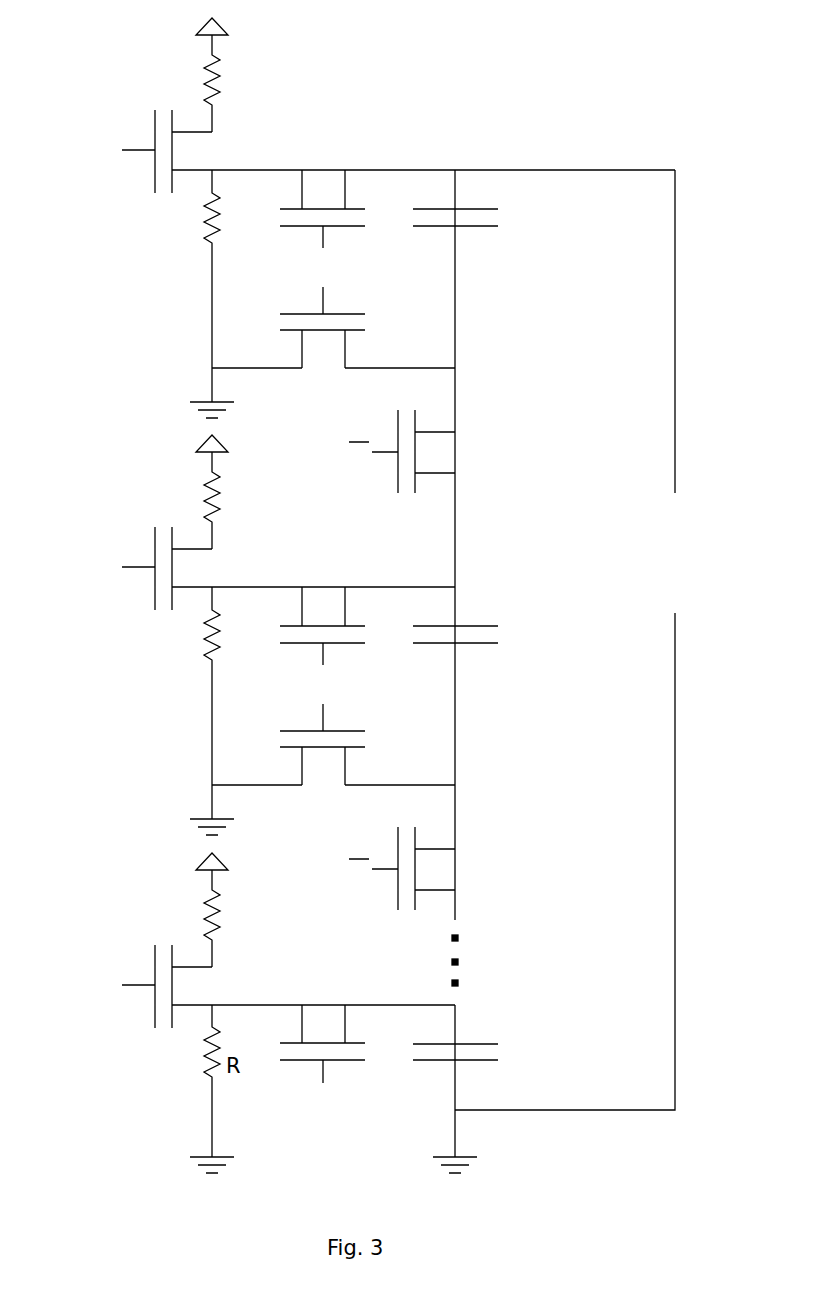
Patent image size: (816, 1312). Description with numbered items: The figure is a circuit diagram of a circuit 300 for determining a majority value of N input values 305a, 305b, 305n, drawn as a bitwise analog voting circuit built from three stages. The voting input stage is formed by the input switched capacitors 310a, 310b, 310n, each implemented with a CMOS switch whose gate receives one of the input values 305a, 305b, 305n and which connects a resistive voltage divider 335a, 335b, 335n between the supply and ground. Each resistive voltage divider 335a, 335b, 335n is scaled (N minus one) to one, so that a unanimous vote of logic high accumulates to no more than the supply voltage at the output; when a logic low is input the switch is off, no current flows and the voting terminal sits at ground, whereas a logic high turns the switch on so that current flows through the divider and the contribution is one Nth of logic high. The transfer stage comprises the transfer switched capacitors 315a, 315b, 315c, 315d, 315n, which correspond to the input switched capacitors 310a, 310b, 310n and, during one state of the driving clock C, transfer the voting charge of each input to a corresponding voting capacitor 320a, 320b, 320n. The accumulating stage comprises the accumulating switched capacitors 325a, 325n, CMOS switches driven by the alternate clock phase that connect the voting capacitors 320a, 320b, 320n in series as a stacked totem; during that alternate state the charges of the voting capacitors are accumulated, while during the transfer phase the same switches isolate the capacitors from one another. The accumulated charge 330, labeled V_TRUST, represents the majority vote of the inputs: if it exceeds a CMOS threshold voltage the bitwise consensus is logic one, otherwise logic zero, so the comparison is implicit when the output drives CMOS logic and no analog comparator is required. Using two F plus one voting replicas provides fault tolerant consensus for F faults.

The circuit 300 is at (620, 106).
The input value 305a is at (106, 163).
The input value 305b is at (106, 580).
The input value 305n is at (106, 998).
The input switched capacitor 310a is at (162, 112).
The input switched capacitor 310b is at (162, 529).
The input switched capacitor 310n is at (162, 947).
The transfer switched capacitor 315a is at (318, 209).
The transfer switched capacitor 315b is at (312, 332).
The transfer switched capacitor 315c is at (318, 627).
The transfer switched capacitor 315d is at (312, 749).
The transfer switched capacitor 315n is at (322, 1043).
The voting capacitor 320a is at (463, 227).
The voting capacitor 320b is at (463, 644).
The voting capacitor 320n is at (480, 1042).
The accumulating switched capacitor 325a is at (415, 452).
The accumulating switched capacitor 325n is at (415, 869).
The accumulated charge 330 is at (599, 640).
The resistive voltage divider 335a is at (204, 65).
The resistive voltage divider 335b is at (204, 482).
The resistive voltage divider 335n is at (204, 900).